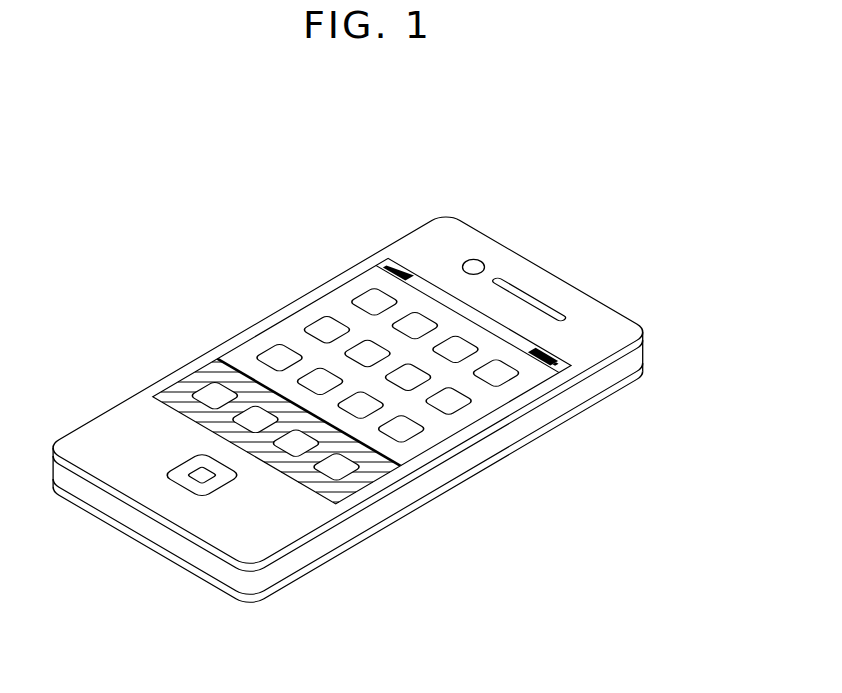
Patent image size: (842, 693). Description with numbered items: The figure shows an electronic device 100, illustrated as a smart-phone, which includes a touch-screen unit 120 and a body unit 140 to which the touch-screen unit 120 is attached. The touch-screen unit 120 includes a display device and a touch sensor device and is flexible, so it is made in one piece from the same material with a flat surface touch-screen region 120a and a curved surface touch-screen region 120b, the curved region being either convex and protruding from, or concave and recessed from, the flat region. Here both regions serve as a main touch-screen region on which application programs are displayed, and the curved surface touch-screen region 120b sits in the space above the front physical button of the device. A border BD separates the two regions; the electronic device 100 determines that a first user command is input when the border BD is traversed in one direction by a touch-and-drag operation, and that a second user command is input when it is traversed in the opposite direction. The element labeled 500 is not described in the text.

The electronic device 100 is at (422, 136).
The touch-screen unit 120 is at (252, 215).
The flat surface touch-screen region 120a is at (333, 360).
The curved surface touch-screen region 120b is at (288, 418).
The body unit 140 is at (263, 517).
The cover window 500 is at (560, 253).
The border BD is at (385, 466).